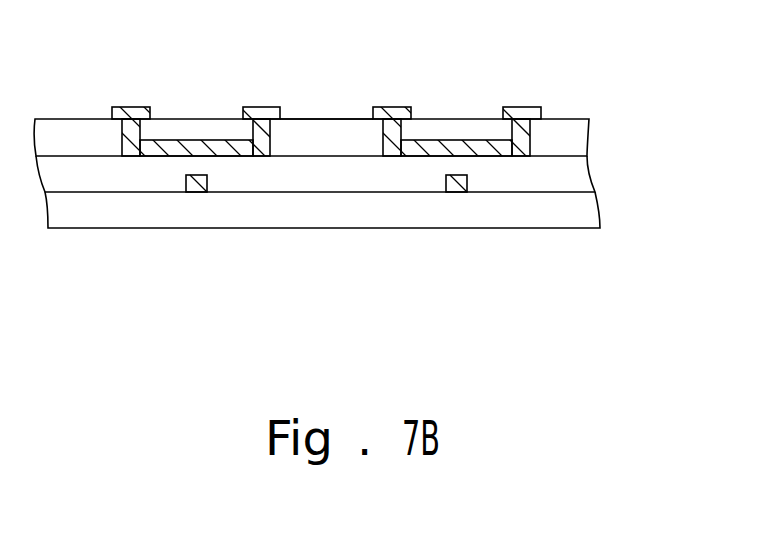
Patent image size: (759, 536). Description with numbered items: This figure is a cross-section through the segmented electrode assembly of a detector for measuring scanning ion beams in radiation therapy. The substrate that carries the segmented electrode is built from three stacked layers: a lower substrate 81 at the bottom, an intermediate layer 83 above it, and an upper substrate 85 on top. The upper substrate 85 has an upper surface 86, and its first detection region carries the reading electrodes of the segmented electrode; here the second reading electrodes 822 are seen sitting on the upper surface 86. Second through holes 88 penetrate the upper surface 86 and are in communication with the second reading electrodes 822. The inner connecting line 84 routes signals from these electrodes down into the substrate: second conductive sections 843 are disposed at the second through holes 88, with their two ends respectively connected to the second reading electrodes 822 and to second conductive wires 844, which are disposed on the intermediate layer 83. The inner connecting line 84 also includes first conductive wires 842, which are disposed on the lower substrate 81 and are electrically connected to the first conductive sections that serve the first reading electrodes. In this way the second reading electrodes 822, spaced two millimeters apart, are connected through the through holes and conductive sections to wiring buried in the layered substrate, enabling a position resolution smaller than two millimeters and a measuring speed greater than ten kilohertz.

The lower substrate 81 is at (570, 223).
The intermediate layer 83 is at (570, 178).
The upper substrate 85 is at (570, 143).
The upper surface 86 is at (326, 70).
The inner connecting line 84 is at (418, 167).
The first conductive wires 842 is at (458, 190).
The second conductive sections 843 is at (392, 132).
The second conductive wires 844 is at (449, 148).
The second reading electrodes 822 is at (522, 110).
The second through holes 88 is at (127, 107).